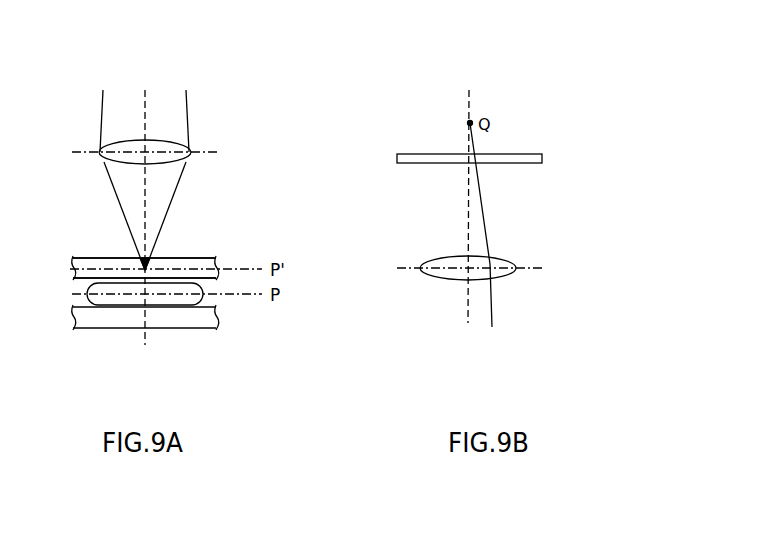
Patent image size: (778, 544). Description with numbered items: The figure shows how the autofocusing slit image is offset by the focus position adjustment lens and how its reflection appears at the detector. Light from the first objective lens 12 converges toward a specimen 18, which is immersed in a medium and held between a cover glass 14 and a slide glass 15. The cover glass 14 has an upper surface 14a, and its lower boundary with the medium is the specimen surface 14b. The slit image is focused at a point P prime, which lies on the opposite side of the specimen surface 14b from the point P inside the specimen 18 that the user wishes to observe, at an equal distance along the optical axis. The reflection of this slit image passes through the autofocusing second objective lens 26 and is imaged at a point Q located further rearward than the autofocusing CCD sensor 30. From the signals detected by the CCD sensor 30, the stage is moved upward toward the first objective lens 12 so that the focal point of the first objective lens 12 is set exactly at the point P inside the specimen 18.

In FIG. 9A, the first objective lens 12 is at (191, 151).
In FIG. 9A, the cover glass 14 is at (217, 266).
In FIG. 9A, the upper surface of the cover glass 14a is at (75, 258).
In FIG. 9A, the specimen surface 14b is at (72, 294).
In FIG. 9A, the specimen 18 is at (203, 292).
In FIG. 9A, the slide glass 15 is at (217, 318).
In FIG. 9B, the autofocusing CCD sensor 30 is at (543, 156).
In FIG. 9B, the autofocusing second objective lens 26 is at (517, 266).